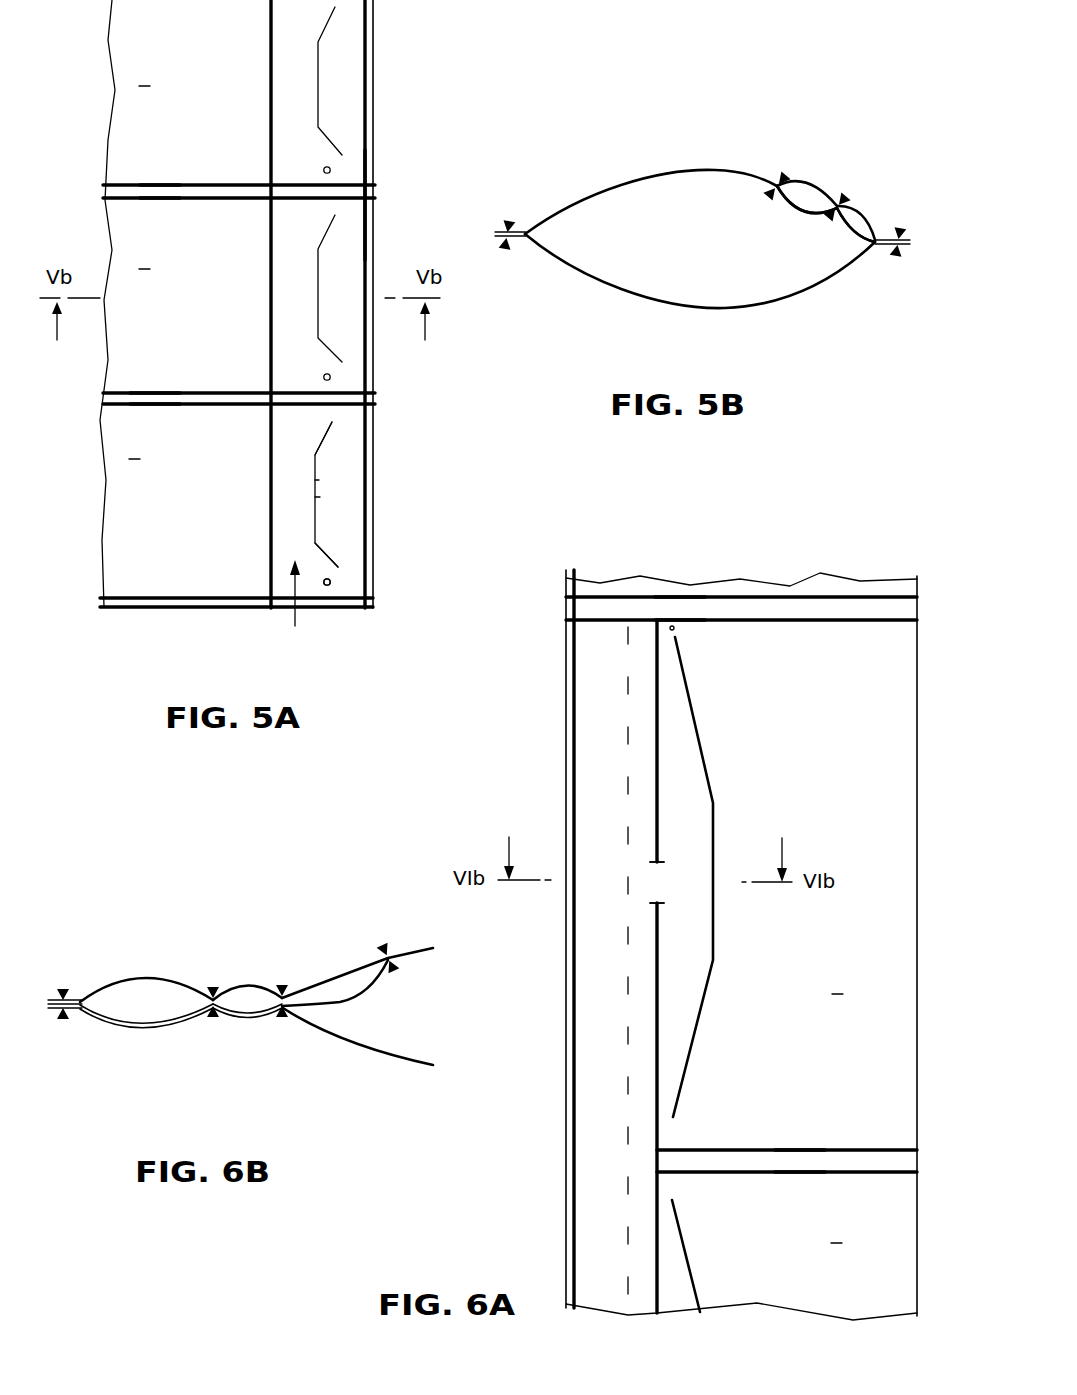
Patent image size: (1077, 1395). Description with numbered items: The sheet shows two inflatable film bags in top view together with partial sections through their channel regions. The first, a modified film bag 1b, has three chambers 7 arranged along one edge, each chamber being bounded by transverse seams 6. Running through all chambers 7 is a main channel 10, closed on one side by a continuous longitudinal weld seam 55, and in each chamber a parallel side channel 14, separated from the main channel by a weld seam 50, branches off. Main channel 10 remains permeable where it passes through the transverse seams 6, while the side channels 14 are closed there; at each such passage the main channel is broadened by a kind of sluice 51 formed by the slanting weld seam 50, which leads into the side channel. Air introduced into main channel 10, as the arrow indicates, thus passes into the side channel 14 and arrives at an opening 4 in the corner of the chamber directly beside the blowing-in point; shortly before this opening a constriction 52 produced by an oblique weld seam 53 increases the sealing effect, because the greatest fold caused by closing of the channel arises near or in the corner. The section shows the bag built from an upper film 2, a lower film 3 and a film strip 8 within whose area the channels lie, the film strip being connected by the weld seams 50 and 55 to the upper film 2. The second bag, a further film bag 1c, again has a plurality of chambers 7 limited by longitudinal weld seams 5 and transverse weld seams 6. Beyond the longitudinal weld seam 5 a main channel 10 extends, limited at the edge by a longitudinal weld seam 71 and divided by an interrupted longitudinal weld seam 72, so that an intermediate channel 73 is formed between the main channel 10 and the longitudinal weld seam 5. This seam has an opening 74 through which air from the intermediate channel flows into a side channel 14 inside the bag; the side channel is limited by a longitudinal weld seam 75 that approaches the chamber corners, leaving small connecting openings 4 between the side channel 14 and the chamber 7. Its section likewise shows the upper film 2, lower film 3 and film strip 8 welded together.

In FIG. 5A, the modified film bag 1b is at (412, 73).
In FIG. 6A, the further film bag 1c is at (836, 557).
In FIG. 5B, the upper film 2 is at (576, 198).
In FIG. 6B, the upper film 2 is at (422, 948).
In FIG. 5B, the lower film 3 is at (592, 284).
In FIG. 6B, the lower film 3 is at (401, 1066).
In FIG. 5A, the opening 4 is at (331, 169).
In FIG. 5B, the opening 4 is at (862, 262).
In FIG. 6A, the opening 4 is at (674, 630).
In FIG. 5A, the longitudinal weld seam 5 is at (367, 217).
In FIG. 5B, the longitudinal weld seam 5 is at (505, 222).
In FIG. 6A, the longitudinal weld seam 5 is at (655, 722).
In FIG. 6B, the longitudinal weld seam 5 is at (284, 985).
In FIG. 5A, the transverse weld seam 6 is at (170, 198).
In FIG. 6A, the transverse weld seam 6 is at (690, 620).
In FIG. 5A, the chamber 7 is at (140, 260).
In FIG. 5B, the chamber 7 is at (644, 200).
In FIG. 6A, the chamber 7 is at (838, 1106).
In FIG. 5B, the film strip 8 is at (793, 207).
In FIG. 6B, the film strip 8 is at (343, 1006).
In FIG. 5A, the main channel 10 is at (291, 540).
In FIG. 5B, the main channel 10 is at (809, 188).
In FIG. 6A, the main channel 10 is at (592, 1073).
In FIG. 6B, the main channel 10 is at (126, 1008).
In FIG. 5A, the side channel 14 is at (344, 478).
In FIG. 5B, the side channel 14 is at (860, 210).
In FIG. 6A, the side channel 14 is at (672, 772).
In FIG. 6B, the side channel 14 is at (337, 983).
In FIG. 5A, the weld seam 50 is at (315, 480).
In FIG. 5B, the weld seam 50 is at (833, 218).
In FIG. 5A, the sluice 51 is at (323, 438).
In FIG. 5A, the constriction 52 is at (348, 574).
In FIG. 5A, the oblique weld seam 53 is at (316, 545).
In FIG. 5A, the continuous longitudinal weld seam 55 is at (271, 243).
In FIG. 5B, the continuous longitudinal weld seam 55 is at (775, 172).
In FIG. 6A, the longitudinal weld seam 71 is at (572, 1030).
In FIG. 6B, the longitudinal weld seam 71 is at (63, 985).
In FIG. 6A, the interrupted longitudinal weld seam 72 is at (628, 980).
In FIG. 6B, the interrupted longitudinal weld seam 72 is at (212, 985).
In FIG. 6A, the intermediate channel 73 is at (640, 1150).
In FIG. 6B, the intermediate channel 73 is at (249, 1010).
In FIG. 6A, the opening 74 is at (653, 878).
In FIG. 6A, the longitudinal weld seam 75 is at (702, 732).
In FIG. 6B, the longitudinal weld seam 75 is at (388, 944).